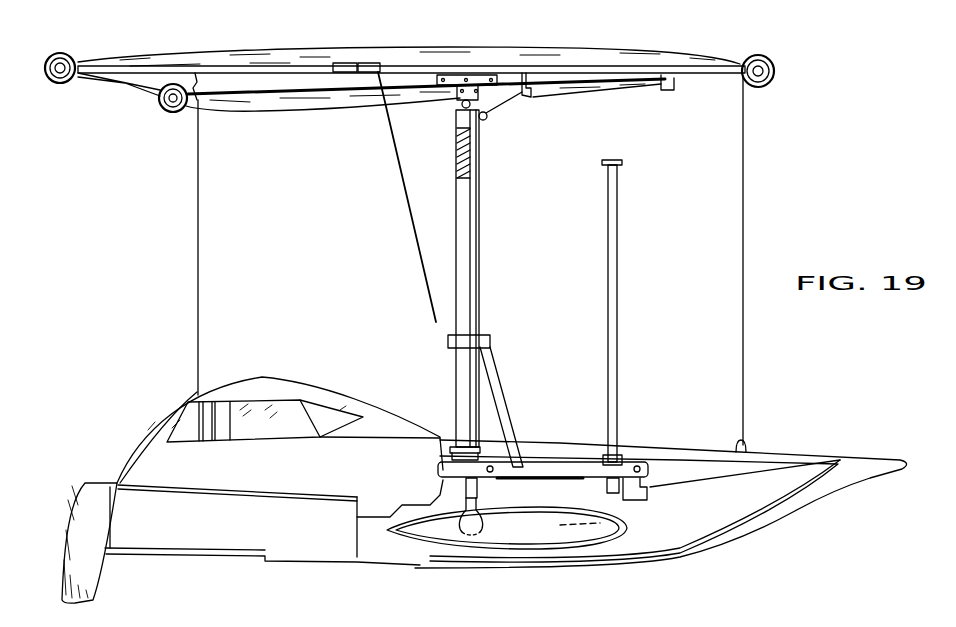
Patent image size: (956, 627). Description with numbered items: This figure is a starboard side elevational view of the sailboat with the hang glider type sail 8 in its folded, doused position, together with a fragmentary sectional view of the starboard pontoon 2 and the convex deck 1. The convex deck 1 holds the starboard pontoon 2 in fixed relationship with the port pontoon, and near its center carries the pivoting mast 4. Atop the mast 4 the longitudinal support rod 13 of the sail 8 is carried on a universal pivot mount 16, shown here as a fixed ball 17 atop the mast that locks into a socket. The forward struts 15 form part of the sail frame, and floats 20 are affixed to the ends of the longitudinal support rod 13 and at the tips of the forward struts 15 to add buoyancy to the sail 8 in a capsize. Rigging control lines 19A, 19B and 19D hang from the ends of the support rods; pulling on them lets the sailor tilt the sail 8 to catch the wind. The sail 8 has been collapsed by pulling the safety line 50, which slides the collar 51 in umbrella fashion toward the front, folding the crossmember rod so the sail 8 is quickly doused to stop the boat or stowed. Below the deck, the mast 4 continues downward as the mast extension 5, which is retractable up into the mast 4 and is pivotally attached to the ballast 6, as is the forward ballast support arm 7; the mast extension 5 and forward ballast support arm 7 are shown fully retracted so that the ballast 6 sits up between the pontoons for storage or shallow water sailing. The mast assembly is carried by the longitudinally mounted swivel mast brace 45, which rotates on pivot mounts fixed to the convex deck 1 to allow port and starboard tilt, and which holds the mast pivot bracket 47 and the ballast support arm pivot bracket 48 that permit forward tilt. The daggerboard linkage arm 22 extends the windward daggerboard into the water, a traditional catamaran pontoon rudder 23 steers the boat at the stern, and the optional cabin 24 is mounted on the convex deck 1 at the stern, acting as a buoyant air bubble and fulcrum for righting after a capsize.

The convex deck 1 is at (880, 465).
The starboard pontoon 2 is at (767, 507).
The pivoting mast 4 is at (462, 268).
The mast extension 5 is at (480, 157).
The ballast 6 is at (528, 540).
The forward ballast support arm 7 is at (617, 269).
The hang glider type sail 8 is at (580, 50).
The longitudinal support rod 13 is at (292, 100).
The forward struts 15 is at (277, 63).
The universal pivot mount 16 is at (473, 75).
The fixed ball 17 is at (457, 100).
The rigging control line 19A is at (745, 207).
The rigging control line 19B is at (197, 257).
The rigging control line 19D is at (400, 222).
The floats 20 is at (53, 57).
The daggerboard linkage arm 22 is at (500, 390).
The pontoon rudder 23 is at (78, 530).
The cabin 24 is at (283, 382).
The swivel mast brace 45 is at (552, 462).
The mast pivot bracket 47 is at (482, 484).
The ballast support arm pivot bracket 48 is at (603, 484).
The safety line 50 is at (505, 106).
The collar 51 is at (657, 76).